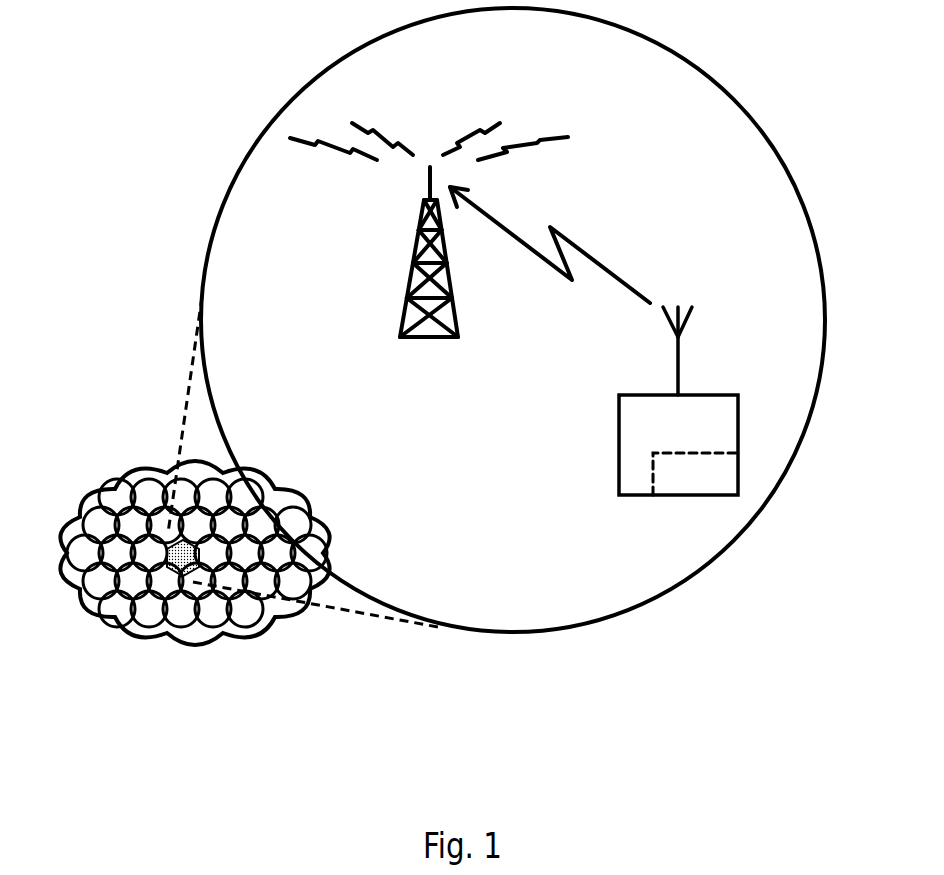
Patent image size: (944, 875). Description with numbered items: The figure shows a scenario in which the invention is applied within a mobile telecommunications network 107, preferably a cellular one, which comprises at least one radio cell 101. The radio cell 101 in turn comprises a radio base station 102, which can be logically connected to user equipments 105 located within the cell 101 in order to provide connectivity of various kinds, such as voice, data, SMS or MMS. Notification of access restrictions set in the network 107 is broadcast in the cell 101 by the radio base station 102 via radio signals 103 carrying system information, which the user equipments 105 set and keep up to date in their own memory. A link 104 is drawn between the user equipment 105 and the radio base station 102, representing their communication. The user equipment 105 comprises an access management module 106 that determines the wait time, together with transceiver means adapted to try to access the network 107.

The radio cell 101 is at (292, 93).
The radio base station 102 is at (408, 267).
The radio signals 103 is at (477, 130).
The communication link between UE and base station 104 is at (595, 252).
The user equipment 105 is at (613, 410).
The access management module 106 is at (645, 478).
The mobile telecommunications network 107 is at (157, 470).